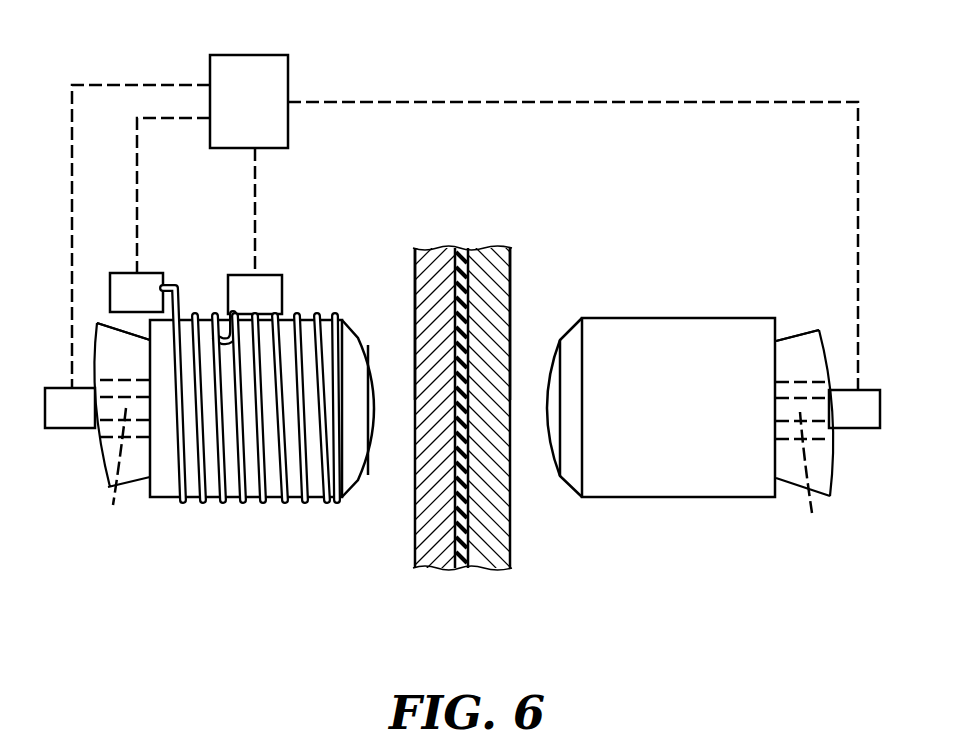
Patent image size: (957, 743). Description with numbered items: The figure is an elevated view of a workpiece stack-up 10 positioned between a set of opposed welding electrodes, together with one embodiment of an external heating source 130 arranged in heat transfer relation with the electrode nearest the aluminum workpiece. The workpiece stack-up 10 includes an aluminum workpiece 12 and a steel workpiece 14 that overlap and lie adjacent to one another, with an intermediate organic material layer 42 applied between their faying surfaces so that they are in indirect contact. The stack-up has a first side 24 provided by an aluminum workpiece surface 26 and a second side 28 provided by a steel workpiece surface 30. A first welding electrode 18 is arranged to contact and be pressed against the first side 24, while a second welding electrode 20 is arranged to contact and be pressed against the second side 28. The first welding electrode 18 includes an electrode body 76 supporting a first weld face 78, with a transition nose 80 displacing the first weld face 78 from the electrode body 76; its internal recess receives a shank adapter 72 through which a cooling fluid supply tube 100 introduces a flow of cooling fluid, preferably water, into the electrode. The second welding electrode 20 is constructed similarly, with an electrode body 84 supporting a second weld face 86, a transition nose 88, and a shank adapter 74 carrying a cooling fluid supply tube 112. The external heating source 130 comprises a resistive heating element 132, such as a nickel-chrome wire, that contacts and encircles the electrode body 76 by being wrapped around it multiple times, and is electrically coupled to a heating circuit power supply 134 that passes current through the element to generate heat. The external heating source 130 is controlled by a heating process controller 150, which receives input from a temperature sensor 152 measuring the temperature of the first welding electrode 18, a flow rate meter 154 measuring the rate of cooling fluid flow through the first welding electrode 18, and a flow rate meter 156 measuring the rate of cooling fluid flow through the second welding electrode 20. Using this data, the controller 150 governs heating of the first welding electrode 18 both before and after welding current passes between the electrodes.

The workpiece stack-up 10 is at (465, 430).
The aluminum workpiece 12 is at (440, 556).
The steel workpiece 14 is at (490, 556).
The intermediate organic material layer 42 is at (462, 556).
The first side 24 is at (412, 338).
The aluminum workpiece surface 26 is at (414, 270).
The second side 28 is at (514, 333).
The steel workpiece surface 30 is at (512, 290).
The first welding electrode 18 is at (278, 407).
The second welding electrode 20 is at (645, 439).
The electrode body 76 is at (253, 480).
The first weld face 78 is at (384, 410).
The transition nose 80 is at (350, 490).
The electrode body 84 is at (628, 482).
The second weld face 86 is at (546, 410).
The transition nose 88 is at (572, 479).
The shank adapter 72 is at (132, 363).
The shank adapter 74 is at (790, 367).
The cooling fluid supply tube 100 is at (121, 430).
The cooling fluid supply tube 112 is at (804, 435).
The external heating source 130 is at (265, 374).
The resistive heating element 132 is at (212, 340).
The heating circuit power supply 134 is at (152, 305).
The heating process controller 150 is at (465, 222).
The temperature sensor 152 is at (271, 307).
The flow rate meter 154 is at (86, 420).
The flow rate meter 156 is at (871, 421).